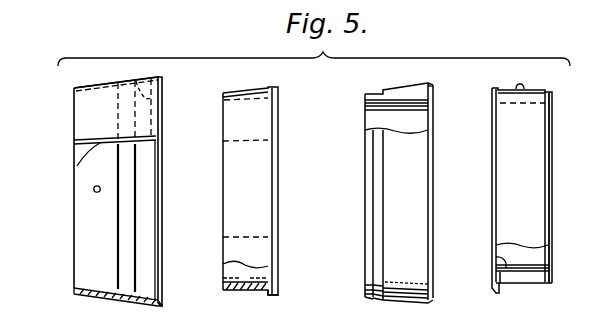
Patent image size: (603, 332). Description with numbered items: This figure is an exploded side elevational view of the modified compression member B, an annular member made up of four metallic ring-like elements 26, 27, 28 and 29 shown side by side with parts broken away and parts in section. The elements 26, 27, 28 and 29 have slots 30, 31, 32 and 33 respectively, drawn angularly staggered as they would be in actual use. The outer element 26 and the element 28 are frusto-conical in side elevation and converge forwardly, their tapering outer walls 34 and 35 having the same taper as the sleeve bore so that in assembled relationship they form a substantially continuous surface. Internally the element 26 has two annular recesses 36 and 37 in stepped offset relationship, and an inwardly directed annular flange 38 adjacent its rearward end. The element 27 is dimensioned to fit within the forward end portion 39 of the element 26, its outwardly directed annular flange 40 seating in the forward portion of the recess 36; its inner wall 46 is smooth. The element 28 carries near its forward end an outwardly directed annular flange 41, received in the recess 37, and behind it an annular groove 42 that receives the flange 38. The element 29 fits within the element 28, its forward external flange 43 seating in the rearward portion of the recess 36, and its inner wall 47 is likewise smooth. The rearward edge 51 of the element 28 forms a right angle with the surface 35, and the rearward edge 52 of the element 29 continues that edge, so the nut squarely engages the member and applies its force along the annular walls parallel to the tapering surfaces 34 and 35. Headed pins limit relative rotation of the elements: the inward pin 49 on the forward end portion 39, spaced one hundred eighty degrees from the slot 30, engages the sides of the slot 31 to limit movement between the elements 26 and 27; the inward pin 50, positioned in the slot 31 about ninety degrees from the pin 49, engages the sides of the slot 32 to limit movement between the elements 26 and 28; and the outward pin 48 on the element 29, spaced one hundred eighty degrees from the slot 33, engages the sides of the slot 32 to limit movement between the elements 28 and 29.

The annular element 26 is at (152, 79).
The tapering outer wall 34 is at (116, 74).
The headed pin 50 is at (158, 100).
The slot 30 is at (74, 164).
The headed pin 49 is at (93, 192).
The internal annular recess 36 is at (124, 288).
The internal annular recess 37 is at (140, 292).
The inwardly directed annular flange 38 is at (160, 296).
The forward end portion 39 is at (84, 287).
The annular element 27 is at (248, 88).
The slot 31 is at (280, 152).
The smooth inner wall 46 is at (262, 278).
The outwardly directed annular flange 40 is at (279, 294).
The tapering outer wall 35 is at (400, 90).
The annular element 28 is at (431, 84).
The slot 32 is at (434, 91).
The outwardly directed annular flange 41 is at (366, 298).
The annular groove 42 is at (378, 298).
The rearward edge 51 is at (431, 298).
The headed pin 48 is at (519, 86).
The annular element 29 is at (550, 88).
The compression member B is at (573, 138).
The smooth inner wall 47 is at (494, 257).
The slot 33 is at (528, 272).
The rearward edge 52 is at (553, 282).
The outwardly directed annular flange 43 is at (496, 290).